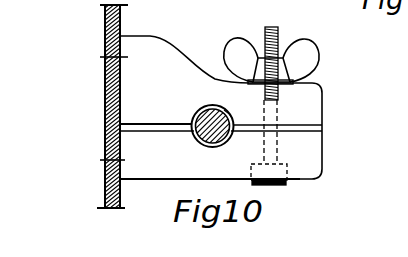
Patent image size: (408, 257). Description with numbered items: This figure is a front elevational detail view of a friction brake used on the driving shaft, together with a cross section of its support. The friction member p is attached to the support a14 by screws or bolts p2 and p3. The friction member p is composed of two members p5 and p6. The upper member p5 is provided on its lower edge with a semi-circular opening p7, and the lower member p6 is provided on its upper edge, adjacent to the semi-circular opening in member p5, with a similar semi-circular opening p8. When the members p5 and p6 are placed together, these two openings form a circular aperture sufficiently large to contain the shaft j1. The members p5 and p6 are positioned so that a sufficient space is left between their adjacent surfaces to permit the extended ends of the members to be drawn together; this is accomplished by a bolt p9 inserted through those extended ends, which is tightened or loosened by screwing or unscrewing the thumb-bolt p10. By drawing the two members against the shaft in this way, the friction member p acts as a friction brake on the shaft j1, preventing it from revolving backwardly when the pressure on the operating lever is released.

The support a14 is at (106, 88).
The friction member p is at (326, 125).
The screw or bolt p2 is at (100, 57).
The screw or bolt p3 is at (100, 160).
The member p5 is at (163, 62).
The member p6 is at (193, 167).
The semi-circular opening p7 is at (196, 110).
The semi-circular opening p8 is at (200, 136).
The bolt p9 is at (284, 183).
The thumb-bolt p10 is at (300, 51).
The shaft j1 is at (232, 116).